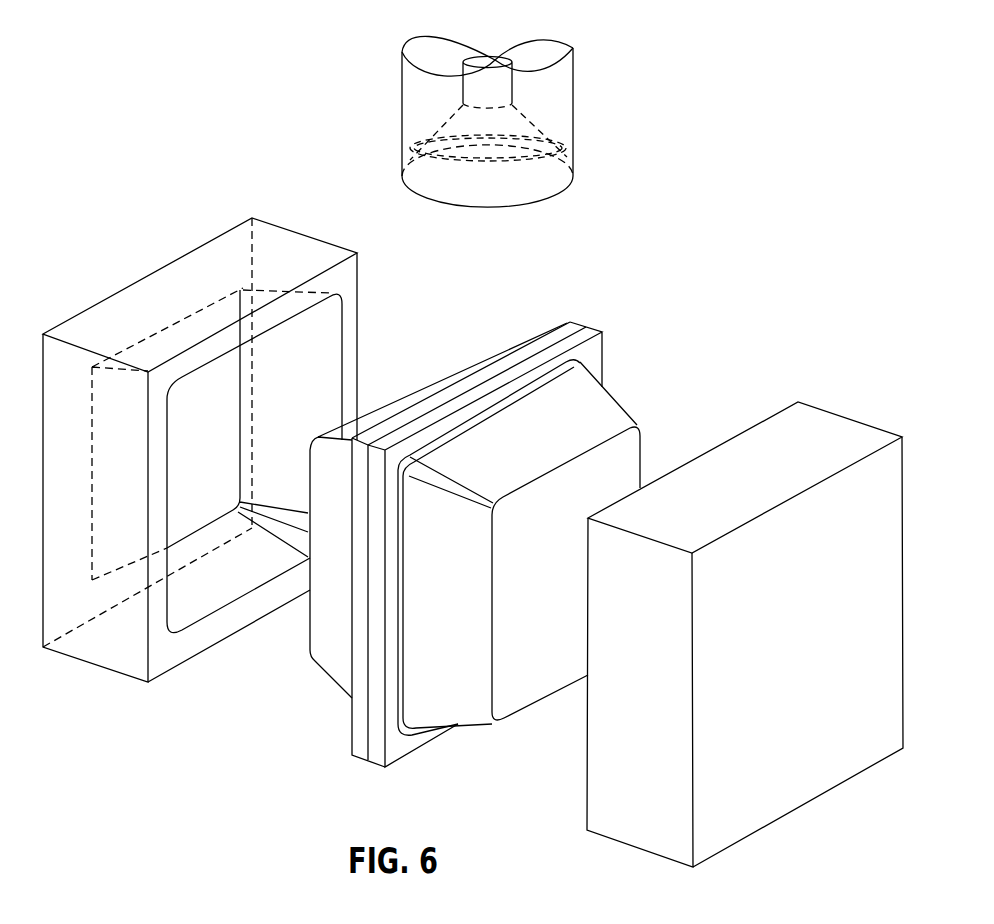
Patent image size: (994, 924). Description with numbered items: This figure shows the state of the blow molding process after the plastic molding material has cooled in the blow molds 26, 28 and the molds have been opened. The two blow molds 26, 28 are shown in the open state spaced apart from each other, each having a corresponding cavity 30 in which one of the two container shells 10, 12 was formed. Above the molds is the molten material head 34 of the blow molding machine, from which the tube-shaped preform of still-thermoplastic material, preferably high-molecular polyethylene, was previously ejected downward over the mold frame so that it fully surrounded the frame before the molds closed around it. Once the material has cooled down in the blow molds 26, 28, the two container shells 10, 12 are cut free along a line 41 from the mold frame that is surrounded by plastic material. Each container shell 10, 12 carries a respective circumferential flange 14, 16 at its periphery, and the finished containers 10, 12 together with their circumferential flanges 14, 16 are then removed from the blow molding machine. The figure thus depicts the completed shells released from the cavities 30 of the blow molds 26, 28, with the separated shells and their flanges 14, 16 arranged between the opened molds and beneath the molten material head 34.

The container shell 10 is at (438, 380).
The container shell 12 is at (595, 418).
The circumferential flange 14 is at (540, 343).
The circumferential flange 16 is at (595, 350).
The blow mold 26 is at (203, 260).
The blow mold 28 is at (832, 425).
The cavity 30 is at (205, 413).
The molten material head 34 is at (573, 100).
The line 41 is at (560, 338).